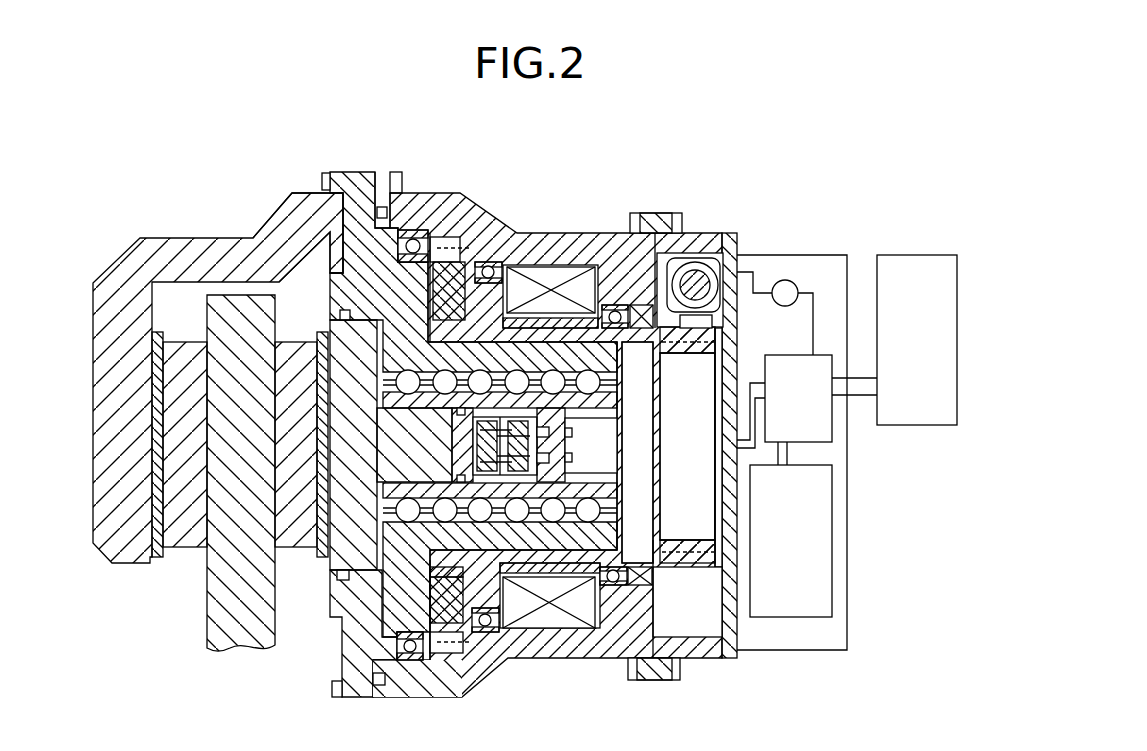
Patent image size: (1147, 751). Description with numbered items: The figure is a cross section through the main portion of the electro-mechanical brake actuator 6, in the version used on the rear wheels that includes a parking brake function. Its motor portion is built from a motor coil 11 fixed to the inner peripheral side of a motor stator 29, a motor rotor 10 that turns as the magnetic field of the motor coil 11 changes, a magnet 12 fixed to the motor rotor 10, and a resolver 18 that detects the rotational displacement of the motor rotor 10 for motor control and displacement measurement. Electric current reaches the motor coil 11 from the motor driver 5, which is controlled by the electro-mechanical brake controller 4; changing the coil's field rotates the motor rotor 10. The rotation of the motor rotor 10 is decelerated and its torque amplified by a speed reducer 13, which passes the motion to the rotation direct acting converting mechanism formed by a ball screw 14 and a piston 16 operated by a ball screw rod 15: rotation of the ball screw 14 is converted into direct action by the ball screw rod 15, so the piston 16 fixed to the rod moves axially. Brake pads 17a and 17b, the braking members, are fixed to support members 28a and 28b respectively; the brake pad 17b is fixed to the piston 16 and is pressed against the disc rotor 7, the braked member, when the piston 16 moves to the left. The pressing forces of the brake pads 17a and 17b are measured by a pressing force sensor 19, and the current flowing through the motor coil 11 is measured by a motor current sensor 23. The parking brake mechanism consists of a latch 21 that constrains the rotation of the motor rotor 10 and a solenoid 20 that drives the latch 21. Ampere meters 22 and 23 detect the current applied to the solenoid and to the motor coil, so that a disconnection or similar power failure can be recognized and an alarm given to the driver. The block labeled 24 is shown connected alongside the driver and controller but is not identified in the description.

The electro-mechanical brake controller 4 is at (832, 503).
The motor driver 5 is at (832, 418).
The electro-mechanical brake actuator 6 is at (357, 156).
The disc rotor 7 is at (208, 627).
The motor rotor 10 is at (493, 307).
The motor coil 11 is at (577, 287).
The magnet 12 is at (527, 567).
The speed reducer 13 is at (453, 280).
The ball screw 14 is at (392, 263).
The ball screw rod 15 is at (623, 483).
The piston 16 is at (330, 578).
The brake pad 17a is at (188, 338).
The brake pad 17b is at (298, 338).
The resolver 18 is at (655, 572).
The pressing force sensor 19 is at (553, 485).
The solenoid 20 is at (697, 262).
The latch 21 is at (713, 318).
The ampere meter 22 is at (788, 281).
The motor current sensor 23 is at (773, 365).
The battery 24 is at (921, 255).
The support member 28a is at (128, 550).
The support member 28b is at (342, 657).
The motor stator 29 is at (553, 235).